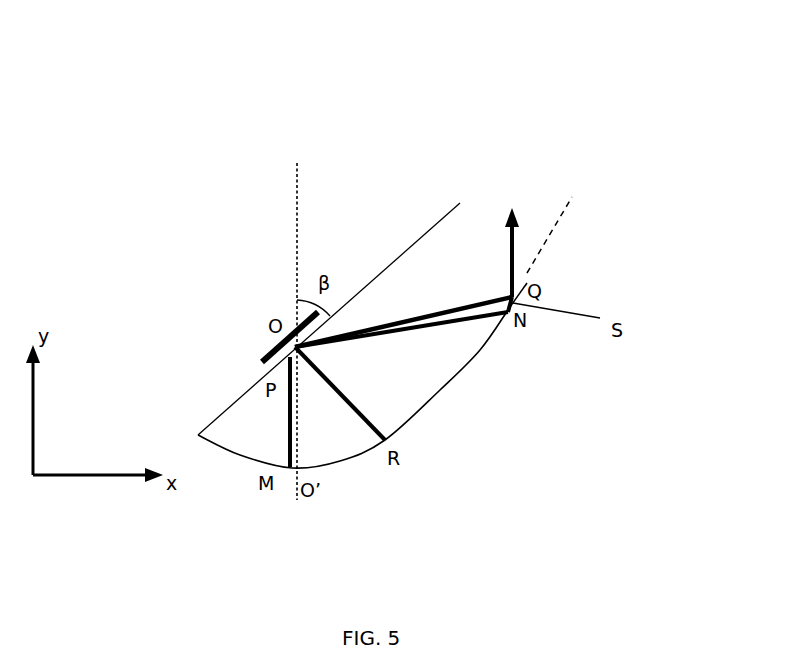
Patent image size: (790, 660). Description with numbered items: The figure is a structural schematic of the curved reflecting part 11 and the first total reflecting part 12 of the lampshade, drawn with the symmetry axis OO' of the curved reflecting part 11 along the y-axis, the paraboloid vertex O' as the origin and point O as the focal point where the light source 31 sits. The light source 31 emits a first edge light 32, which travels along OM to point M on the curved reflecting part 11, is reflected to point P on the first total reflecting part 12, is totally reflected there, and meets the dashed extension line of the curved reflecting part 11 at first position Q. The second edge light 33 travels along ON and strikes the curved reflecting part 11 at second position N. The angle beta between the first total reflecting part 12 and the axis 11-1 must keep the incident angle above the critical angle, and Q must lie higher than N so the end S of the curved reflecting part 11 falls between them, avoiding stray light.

The curved reflecting part 11 is at (457, 378).
The optical axis of lens 11-1 is at (297, 200).
The first total reflecting part 12 is at (412, 245).
The light source 31 is at (273, 348).
The first edge light 32 is at (300, 418).
The second edge light 33 is at (477, 320).